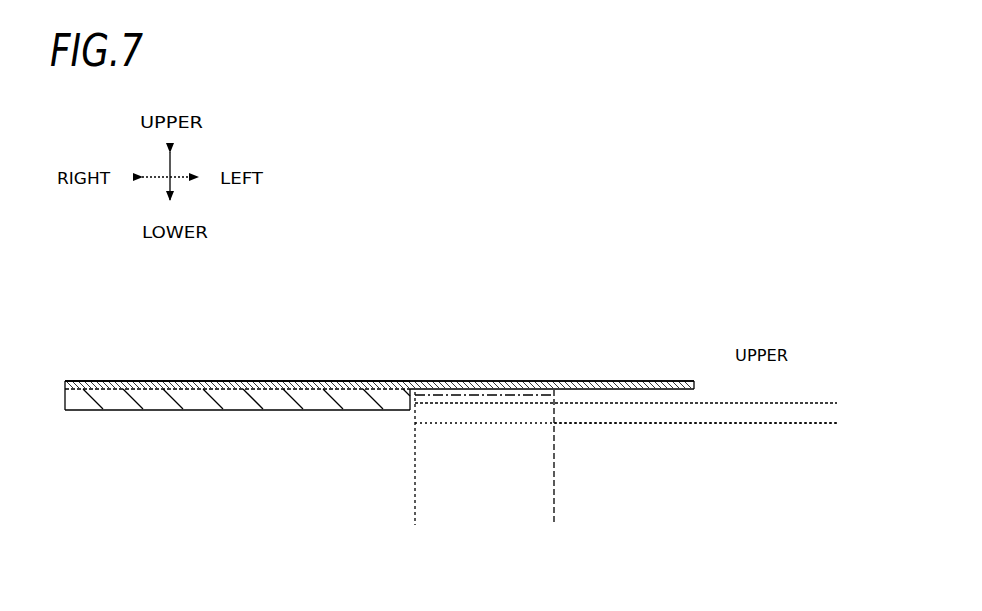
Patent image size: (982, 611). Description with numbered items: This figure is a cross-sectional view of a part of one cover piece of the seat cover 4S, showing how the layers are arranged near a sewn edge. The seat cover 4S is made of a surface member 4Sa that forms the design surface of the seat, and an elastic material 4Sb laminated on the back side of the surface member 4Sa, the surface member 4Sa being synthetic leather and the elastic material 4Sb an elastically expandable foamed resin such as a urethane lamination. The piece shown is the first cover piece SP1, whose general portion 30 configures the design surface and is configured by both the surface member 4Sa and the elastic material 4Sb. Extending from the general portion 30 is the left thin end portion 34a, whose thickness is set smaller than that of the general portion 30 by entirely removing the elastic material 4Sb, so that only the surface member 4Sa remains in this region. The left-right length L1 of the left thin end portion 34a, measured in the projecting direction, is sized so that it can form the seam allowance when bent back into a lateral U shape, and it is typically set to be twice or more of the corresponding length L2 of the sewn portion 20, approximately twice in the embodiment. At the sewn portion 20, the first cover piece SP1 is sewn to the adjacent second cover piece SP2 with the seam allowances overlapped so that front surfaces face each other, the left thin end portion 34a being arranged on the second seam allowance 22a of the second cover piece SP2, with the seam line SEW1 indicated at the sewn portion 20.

The seat cover 4S is at (724, 201).
The surface member 4Sa is at (153, 383).
The elastic material 4Sb is at (202, 404).
The first cover piece SP1 is at (258, 379).
The second cover piece SP2 is at (706, 428).
The general portion 30 is at (410, 380).
The left thin end portion 34a is at (694, 380).
The left-right length of the left thin end portion L1 is at (694, 243).
The corresponding length of the sewn portion L2 is at (553, 513).
The sewing line SEW1 is at (557, 404).
The second seam allowance 22a is at (497, 418).
The sewn portion 20 is at (459, 424).